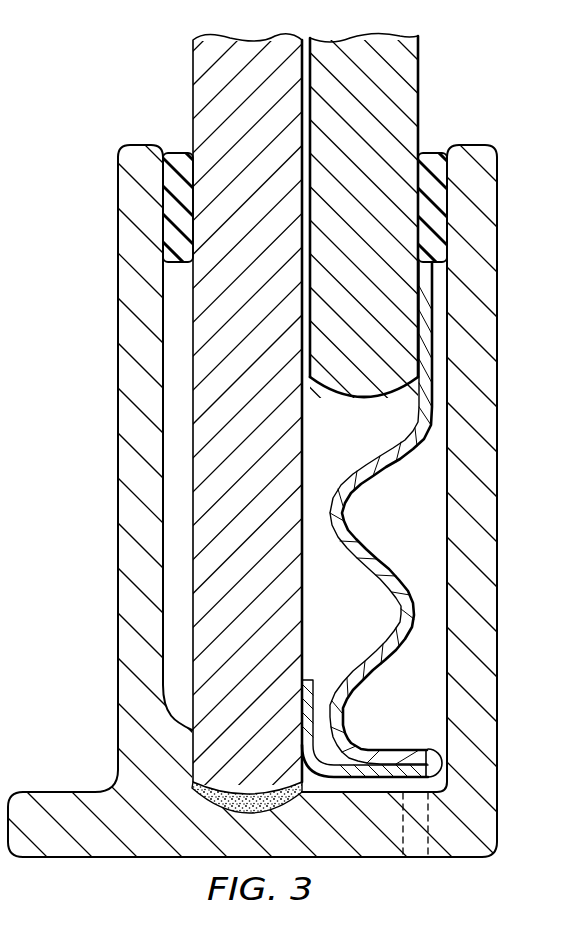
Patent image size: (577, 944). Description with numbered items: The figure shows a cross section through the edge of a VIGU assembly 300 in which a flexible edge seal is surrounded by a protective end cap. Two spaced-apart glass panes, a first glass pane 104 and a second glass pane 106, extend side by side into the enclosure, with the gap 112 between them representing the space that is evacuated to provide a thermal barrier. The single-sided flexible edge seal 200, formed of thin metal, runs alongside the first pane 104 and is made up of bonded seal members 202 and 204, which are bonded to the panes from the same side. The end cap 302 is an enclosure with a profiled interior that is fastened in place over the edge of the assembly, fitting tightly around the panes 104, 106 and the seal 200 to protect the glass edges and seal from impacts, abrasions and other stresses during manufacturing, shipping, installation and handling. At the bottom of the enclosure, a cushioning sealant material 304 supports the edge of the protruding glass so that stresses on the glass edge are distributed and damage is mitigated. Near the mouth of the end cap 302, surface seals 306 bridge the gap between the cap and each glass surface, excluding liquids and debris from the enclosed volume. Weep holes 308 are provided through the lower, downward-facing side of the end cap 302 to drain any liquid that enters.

The VIGU assembly 300 is at (524, 107).
The end cap 302 is at (117, 597).
The cushioning sealant material 304 is at (197, 805).
The surface seals 306 is at (176, 152).
The weep holes 308 is at (408, 838).
The first glass pane 104 is at (408, 71).
The second glass pane 106 is at (198, 68).
The gap 112 is at (308, 382).
The flexible edge seal 200 is at (395, 530).
The seal member 202 is at (374, 665).
The seal member 204 is at (360, 777).